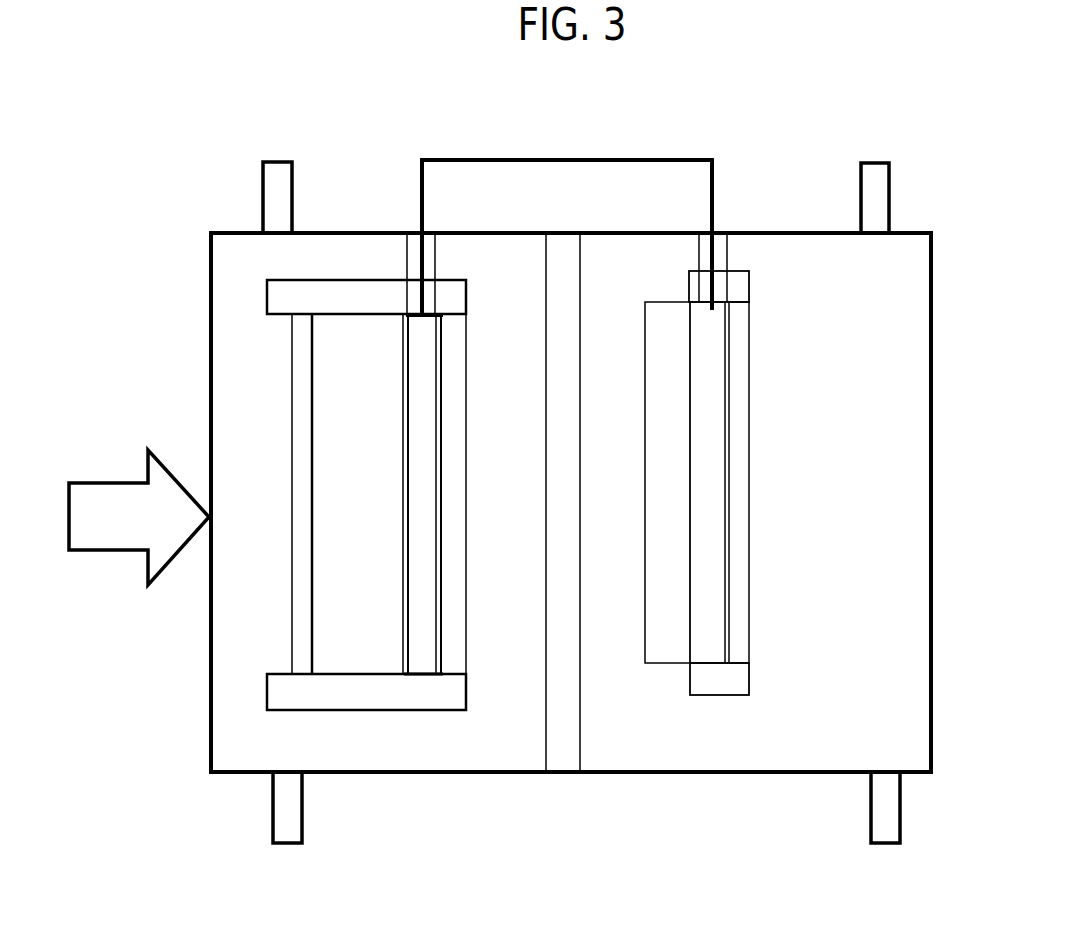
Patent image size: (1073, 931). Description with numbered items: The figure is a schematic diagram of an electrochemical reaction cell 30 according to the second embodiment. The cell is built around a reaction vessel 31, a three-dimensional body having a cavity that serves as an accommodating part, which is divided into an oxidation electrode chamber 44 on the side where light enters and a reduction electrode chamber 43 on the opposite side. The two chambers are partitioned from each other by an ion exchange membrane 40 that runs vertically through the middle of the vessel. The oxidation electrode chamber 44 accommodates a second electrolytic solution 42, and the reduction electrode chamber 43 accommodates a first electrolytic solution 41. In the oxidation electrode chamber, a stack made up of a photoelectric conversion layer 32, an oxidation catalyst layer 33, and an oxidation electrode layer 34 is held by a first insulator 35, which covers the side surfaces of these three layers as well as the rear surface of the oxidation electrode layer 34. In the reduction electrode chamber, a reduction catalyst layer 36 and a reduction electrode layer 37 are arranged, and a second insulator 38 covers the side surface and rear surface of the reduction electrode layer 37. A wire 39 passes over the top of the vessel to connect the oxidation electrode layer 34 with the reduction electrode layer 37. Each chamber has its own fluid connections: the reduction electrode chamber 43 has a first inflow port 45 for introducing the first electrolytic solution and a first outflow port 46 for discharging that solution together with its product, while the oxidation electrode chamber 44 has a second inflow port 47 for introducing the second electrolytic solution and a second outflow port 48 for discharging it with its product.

The electrochemical reaction cell 30 is at (387, 150).
The reaction vessel 31 is at (926, 329).
The photoelectric conversion layer 32 is at (307, 497).
The oxidation catalyst layer 33 is at (302, 398).
The oxidation electrode layer 34 is at (418, 582).
The first insulator 35 is at (452, 663).
The reduction catalyst layer 36 is at (710, 496).
The reduction electrode layer 37 is at (707, 608).
The second insulator 38 is at (741, 645).
The wire 39 is at (567, 223).
The ion exchange membrane 40 is at (561, 750).
The first electrolytic solution 41 is at (888, 415).
The second electrolytic solution 42 is at (265, 432).
The reduction electrode chamber 43 is at (656, 750).
The oxidation electrode chamber 44 is at (359, 748).
The first inflow port 45 is at (865, 792).
The first outflow port 46 is at (852, 202).
The second inflow port 47 is at (265, 792).
The second outflow port 48 is at (258, 202).